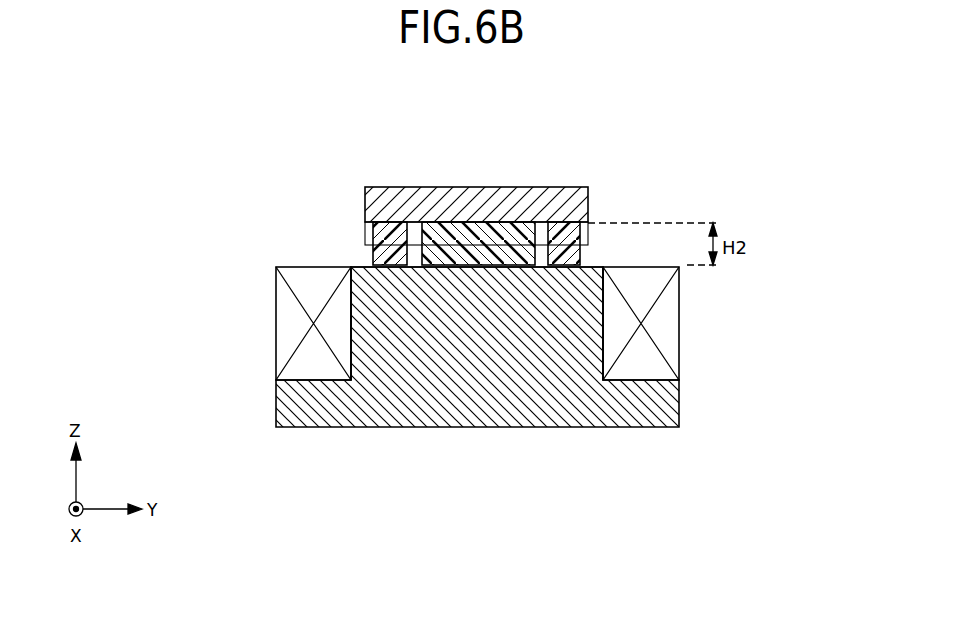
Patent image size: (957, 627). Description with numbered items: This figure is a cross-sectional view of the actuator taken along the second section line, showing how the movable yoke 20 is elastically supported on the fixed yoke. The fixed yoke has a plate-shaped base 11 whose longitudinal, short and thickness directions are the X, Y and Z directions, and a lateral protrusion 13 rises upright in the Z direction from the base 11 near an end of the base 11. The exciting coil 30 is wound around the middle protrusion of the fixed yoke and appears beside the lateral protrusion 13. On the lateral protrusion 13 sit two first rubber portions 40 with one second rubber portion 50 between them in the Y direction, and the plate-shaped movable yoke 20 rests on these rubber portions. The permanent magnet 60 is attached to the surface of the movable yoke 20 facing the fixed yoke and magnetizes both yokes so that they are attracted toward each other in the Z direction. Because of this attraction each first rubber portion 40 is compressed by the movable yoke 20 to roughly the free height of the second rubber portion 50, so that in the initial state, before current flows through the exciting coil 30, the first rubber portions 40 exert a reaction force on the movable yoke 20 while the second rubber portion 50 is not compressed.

The base 11 is at (633, 412).
The lateral protrusion 13 is at (473, 362).
The movable yoke 20 is at (427, 205).
The exciting coil 30 is at (292, 330).
The first rubber portion 40 is at (392, 230).
The second rubber portion 50 is at (480, 230).
The permanent magnet 60 is at (538, 230).